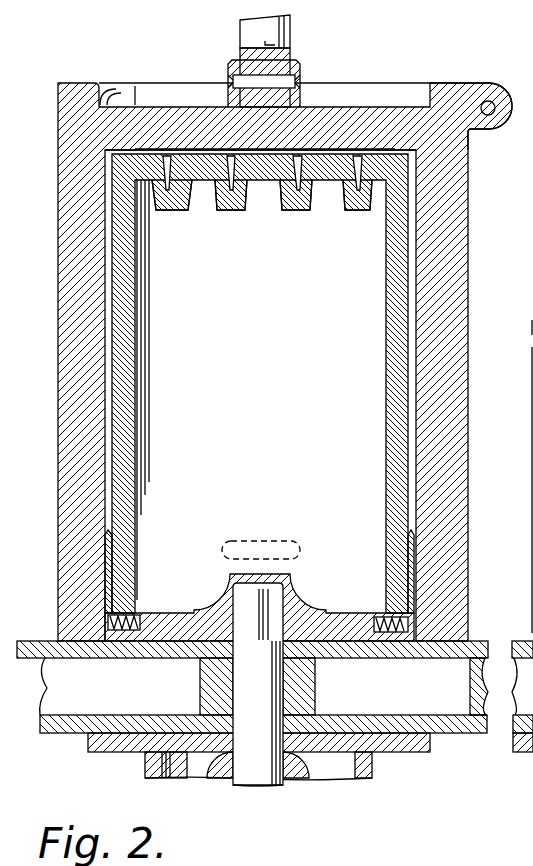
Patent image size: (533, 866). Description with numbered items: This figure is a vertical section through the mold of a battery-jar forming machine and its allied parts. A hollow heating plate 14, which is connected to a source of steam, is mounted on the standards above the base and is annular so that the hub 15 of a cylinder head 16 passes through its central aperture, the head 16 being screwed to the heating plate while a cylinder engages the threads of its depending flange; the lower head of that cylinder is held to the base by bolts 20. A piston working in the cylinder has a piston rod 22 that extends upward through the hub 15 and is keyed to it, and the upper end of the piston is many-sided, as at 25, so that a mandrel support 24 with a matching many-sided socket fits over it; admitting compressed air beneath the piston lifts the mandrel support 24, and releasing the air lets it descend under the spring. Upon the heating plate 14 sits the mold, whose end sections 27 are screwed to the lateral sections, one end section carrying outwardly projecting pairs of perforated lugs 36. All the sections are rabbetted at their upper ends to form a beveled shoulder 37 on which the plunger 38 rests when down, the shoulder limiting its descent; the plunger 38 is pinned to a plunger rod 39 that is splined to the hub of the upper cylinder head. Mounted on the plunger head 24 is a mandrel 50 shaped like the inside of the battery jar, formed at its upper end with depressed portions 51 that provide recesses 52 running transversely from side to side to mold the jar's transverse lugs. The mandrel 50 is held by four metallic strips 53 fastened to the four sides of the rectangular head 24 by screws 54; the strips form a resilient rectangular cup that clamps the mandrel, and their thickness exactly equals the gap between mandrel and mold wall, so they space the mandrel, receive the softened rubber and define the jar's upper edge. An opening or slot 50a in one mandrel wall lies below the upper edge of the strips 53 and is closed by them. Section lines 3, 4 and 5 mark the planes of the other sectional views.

The section line 3- 3 is at (303, 39).
The section line 4- 4 is at (80, 356).
The section line 5- 5 is at (72, 563).
The heating plate 14 is at (473, 642).
The hub 15 is at (290, 701).
The cylinder head 16 is at (146, 770).
The bolts 20 is at (532, 437).
The piston rod 22 is at (248, 777).
The mandrel support 24 is at (336, 608).
The many-sided upper end 25 is at (275, 597).
The end sections 27 is at (58, 459).
The perforated lugs 36 is at (490, 88).
The beveled shoulder 37 is at (469, 151).
The plunger 38 is at (332, 119).
The plunger rod 39 is at (247, 33).
The mandrel 50 is at (387, 376).
The opening or slot 50a is at (268, 534).
The depressed portions 51 is at (233, 211).
The recesses 52 is at (313, 211).
The metallic strips 53 is at (112, 572).
The screws 54 is at (128, 640).